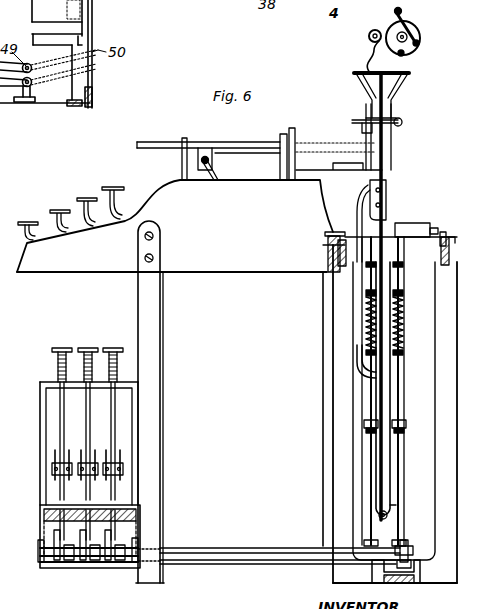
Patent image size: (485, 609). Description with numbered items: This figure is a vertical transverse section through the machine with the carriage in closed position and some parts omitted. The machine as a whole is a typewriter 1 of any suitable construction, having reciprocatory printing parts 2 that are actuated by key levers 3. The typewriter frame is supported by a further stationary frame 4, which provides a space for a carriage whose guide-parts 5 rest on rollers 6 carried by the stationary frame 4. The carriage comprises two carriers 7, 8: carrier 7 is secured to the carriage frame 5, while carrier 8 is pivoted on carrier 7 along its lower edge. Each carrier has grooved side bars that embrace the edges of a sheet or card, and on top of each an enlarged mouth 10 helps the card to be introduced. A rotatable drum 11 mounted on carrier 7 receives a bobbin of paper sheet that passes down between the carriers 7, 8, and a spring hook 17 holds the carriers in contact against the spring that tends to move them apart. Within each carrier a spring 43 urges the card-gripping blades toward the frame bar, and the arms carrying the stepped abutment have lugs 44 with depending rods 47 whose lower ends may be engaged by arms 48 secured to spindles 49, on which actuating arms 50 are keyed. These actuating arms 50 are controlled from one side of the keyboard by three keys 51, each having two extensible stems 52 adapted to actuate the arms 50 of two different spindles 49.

The typewriter 1 is at (157, 200).
The reciprocatory printing parts 2 is at (235, 146).
The key levers 3 is at (62, 211).
The stationary frame 4 is at (340, 386).
The carriage guide-parts 5 is at (433, 233).
The rollers 6 is at (428, 266).
The carrier 7 is at (379, 474).
The carrier 8 is at (392, 466).
The enlarged mouth 10 is at (366, 80).
The rotatable drum 11 is at (414, 24).
The spring hook 17 is at (352, 121).
The spring 43 is at (402, 314).
The lugs 44 is at (399, 425).
The depending rods 47 is at (372, 510).
The arms 48 is at (372, 576).
The spindles 49 is at (198, 551).
The actuating arms 50 is at (125, 546).
The keys 51 is at (116, 366).
The extensible stems 52 is at (125, 487).